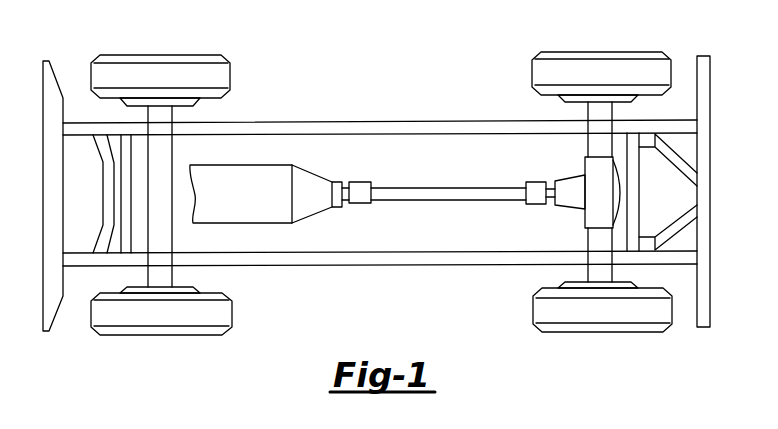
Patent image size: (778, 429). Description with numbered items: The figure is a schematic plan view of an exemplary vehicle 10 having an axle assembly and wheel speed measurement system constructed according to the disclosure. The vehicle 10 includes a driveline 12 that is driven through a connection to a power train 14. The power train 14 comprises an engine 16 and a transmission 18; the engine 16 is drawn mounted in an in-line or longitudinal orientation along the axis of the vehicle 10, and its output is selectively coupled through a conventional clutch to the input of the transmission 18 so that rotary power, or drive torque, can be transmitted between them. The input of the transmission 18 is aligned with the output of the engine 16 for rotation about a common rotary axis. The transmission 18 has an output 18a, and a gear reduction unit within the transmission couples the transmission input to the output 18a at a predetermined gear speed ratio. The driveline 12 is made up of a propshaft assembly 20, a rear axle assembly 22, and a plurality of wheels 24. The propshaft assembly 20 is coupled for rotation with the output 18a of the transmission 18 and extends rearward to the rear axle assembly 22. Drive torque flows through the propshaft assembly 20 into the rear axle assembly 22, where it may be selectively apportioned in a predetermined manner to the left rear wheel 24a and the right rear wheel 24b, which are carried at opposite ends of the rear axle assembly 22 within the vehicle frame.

The vehicle 10 is at (335, 70).
The driveline 12 is at (547, 175).
The power train 14 is at (304, 219).
The engine 16 is at (252, 203).
The transmission 18 is at (333, 183).
The output 18a is at (346, 202).
The propshaft assembly 20 is at (464, 187).
The rear axle assembly 22 is at (578, 220).
The wheels 24 is at (172, 338).
The left rear wheel 24a is at (540, 305).
The right rear wheel 24b is at (532, 63).